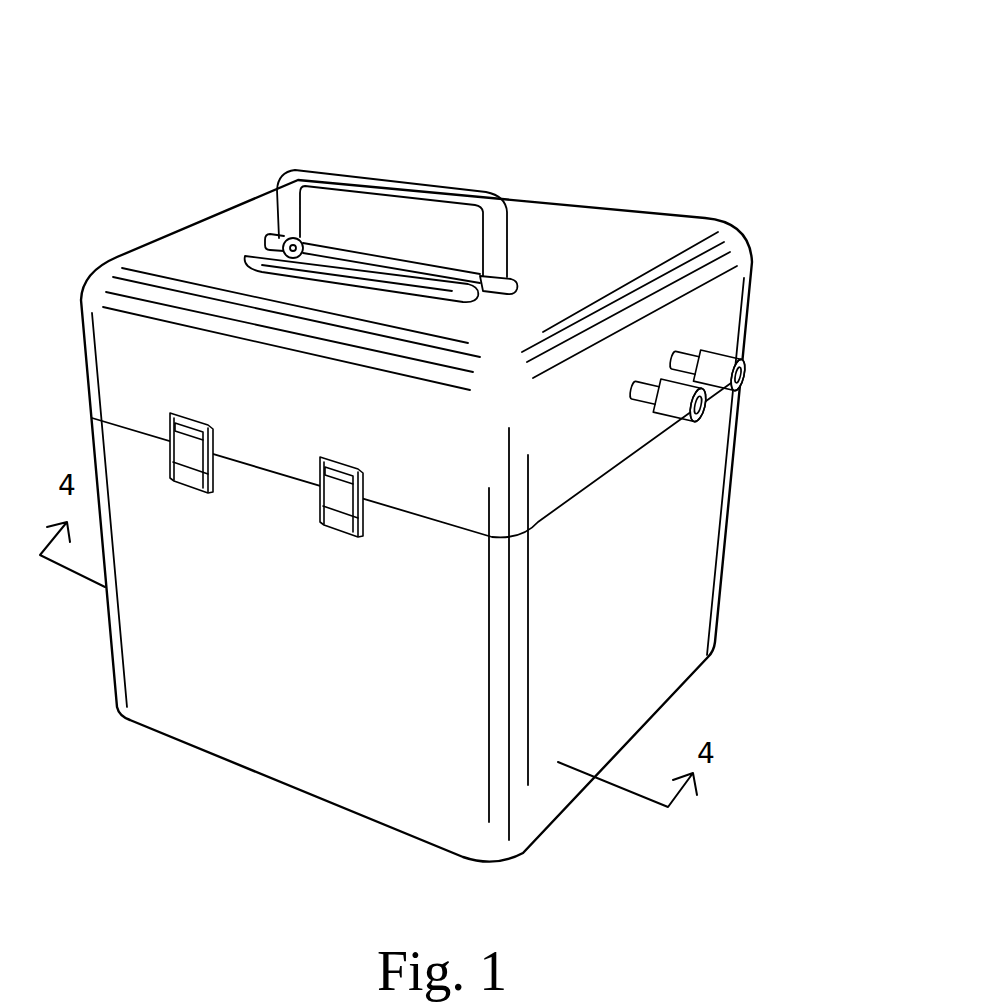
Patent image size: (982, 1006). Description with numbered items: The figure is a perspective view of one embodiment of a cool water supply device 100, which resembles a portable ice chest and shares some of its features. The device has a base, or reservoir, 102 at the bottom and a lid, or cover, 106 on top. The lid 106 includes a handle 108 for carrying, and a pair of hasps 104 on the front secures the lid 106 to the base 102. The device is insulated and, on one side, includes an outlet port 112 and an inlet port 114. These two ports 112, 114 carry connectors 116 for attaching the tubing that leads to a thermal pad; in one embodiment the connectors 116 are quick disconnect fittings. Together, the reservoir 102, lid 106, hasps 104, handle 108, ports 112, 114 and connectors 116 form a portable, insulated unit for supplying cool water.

The cool water supply device 100 is at (673, 100).
The base 102 is at (273, 778).
The hasps 104 is at (318, 505).
The lid 106 is at (213, 222).
The handle 108 is at (325, 165).
The outlet port 112 is at (643, 402).
The inlet port 114 is at (687, 350).
The connectors 116 is at (708, 424).